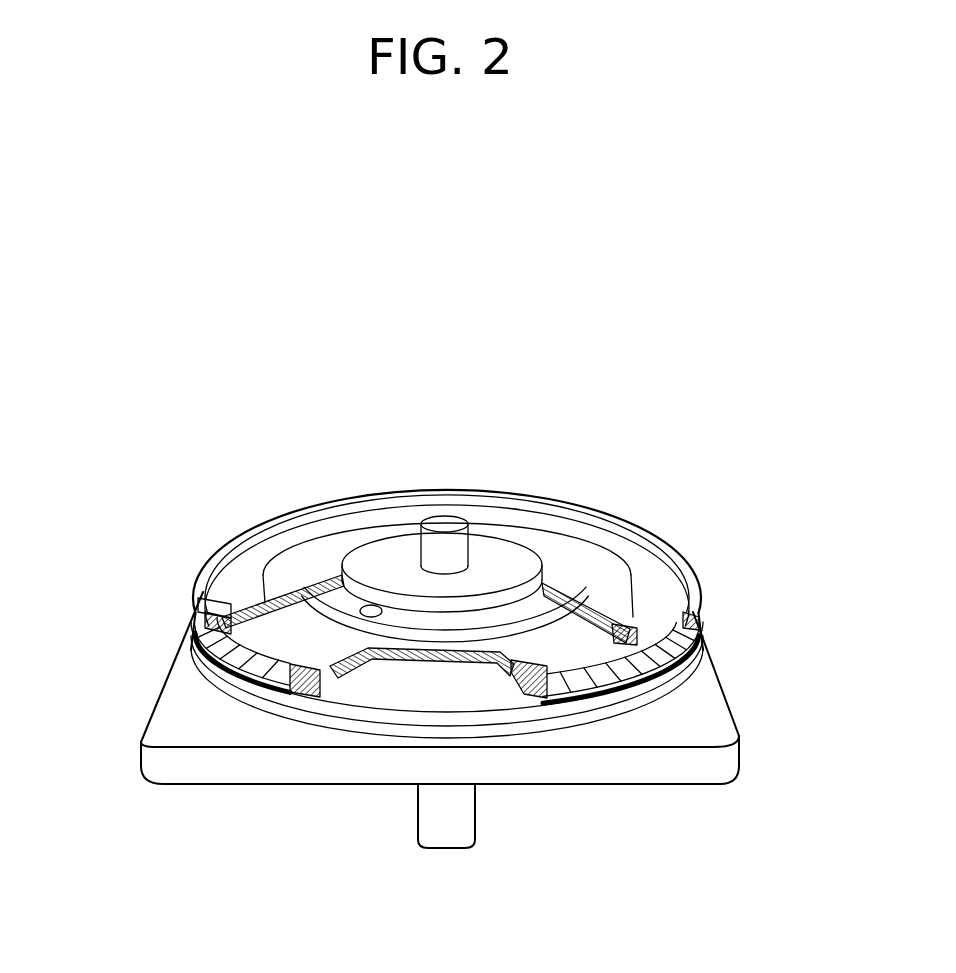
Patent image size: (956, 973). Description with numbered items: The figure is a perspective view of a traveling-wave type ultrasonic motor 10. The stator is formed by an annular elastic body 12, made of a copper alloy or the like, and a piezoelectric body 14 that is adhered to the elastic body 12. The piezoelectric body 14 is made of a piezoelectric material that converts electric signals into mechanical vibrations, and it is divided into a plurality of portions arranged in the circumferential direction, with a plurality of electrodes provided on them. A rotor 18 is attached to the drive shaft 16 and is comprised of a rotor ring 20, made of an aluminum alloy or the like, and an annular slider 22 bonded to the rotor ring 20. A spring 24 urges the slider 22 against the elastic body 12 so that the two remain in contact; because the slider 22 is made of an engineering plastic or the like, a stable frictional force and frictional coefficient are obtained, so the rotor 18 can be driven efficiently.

The ultrasonic motor 10 is at (697, 334).
The elastic body 12 is at (692, 617).
The piezoelectric body 14 is at (696, 641).
The drive shaft 16 is at (454, 516).
The rotor 18 is at (93, 511).
The rotor ring 20 is at (217, 553).
The slider 22 is at (203, 645).
The spring 24 is at (375, 537).